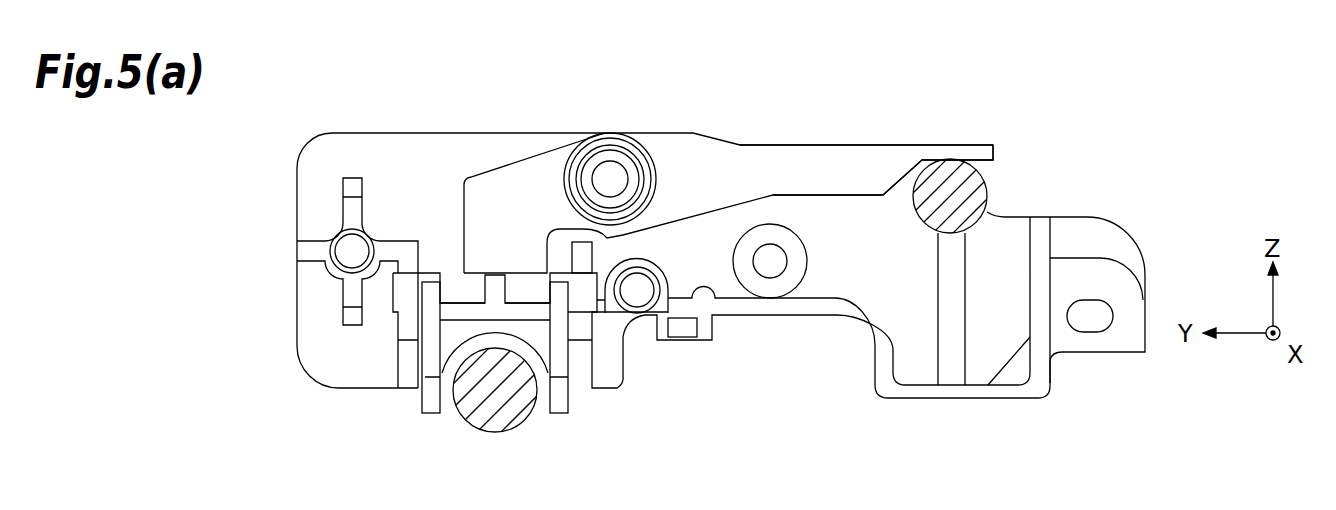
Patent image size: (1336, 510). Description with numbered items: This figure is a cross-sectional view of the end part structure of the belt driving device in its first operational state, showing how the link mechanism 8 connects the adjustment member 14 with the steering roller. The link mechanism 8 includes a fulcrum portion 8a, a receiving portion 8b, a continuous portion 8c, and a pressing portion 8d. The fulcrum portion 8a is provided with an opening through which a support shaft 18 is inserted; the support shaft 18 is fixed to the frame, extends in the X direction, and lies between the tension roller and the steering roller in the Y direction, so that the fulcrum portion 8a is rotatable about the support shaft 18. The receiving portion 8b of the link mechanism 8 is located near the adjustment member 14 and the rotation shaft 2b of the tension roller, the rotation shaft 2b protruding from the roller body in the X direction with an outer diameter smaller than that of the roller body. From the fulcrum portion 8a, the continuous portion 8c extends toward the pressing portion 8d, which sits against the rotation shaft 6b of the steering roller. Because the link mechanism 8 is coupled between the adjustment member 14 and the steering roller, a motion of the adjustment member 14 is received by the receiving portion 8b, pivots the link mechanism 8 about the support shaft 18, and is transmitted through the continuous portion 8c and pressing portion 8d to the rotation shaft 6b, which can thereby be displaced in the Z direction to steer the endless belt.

The link mechanism 8 is at (737, 129).
The fulcrum portion 8a is at (611, 134).
The receiving portion 8b is at (497, 250).
The continuous portion 8c is at (805, 168).
The pressing portion 8d is at (958, 150).
The support shaft 18 is at (615, 177).
The rotation shaft 6b is at (987, 178).
The adjustment member 14 is at (420, 400).
The rotation shaft 2b is at (528, 420).